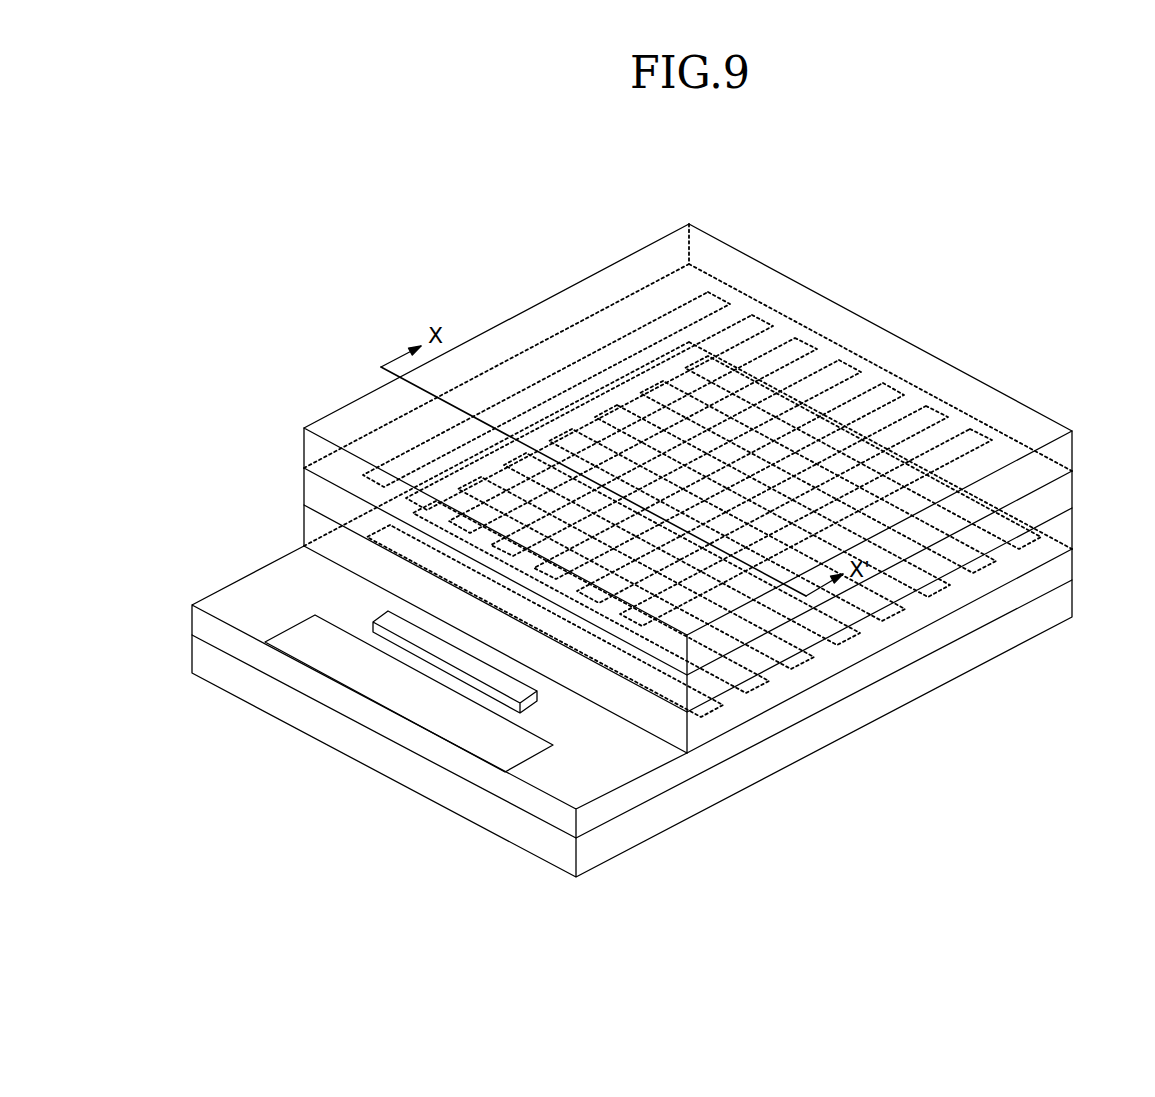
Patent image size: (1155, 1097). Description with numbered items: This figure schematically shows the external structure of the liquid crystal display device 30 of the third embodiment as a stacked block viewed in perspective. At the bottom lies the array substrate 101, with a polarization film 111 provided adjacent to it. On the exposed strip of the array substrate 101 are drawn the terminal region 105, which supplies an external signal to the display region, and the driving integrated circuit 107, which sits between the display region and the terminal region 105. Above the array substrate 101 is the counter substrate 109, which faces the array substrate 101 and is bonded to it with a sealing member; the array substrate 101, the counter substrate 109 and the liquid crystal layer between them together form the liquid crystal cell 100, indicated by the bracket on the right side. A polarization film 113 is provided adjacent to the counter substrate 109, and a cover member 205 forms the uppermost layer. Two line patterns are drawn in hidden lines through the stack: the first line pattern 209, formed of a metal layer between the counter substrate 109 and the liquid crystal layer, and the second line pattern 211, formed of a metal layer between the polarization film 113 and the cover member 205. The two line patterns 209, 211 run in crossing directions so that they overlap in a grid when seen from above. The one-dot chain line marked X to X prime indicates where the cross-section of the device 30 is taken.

The liquid crystal display device 30 is at (592, 251).
The cover member 205 is at (300, 447).
The polarization film 113 is at (300, 486).
The counter substrate 109 is at (302, 527).
The second line pattern 211 is at (930, 420).
The first line pattern 209 is at (768, 680).
The liquid crystal cell 100 is at (1076, 512).
The array substrate 101 is at (965, 620).
The polarization film 111 is at (1068, 607).
The driving integrated circuit 107 is at (538, 707).
The terminal region 105 is at (532, 752).